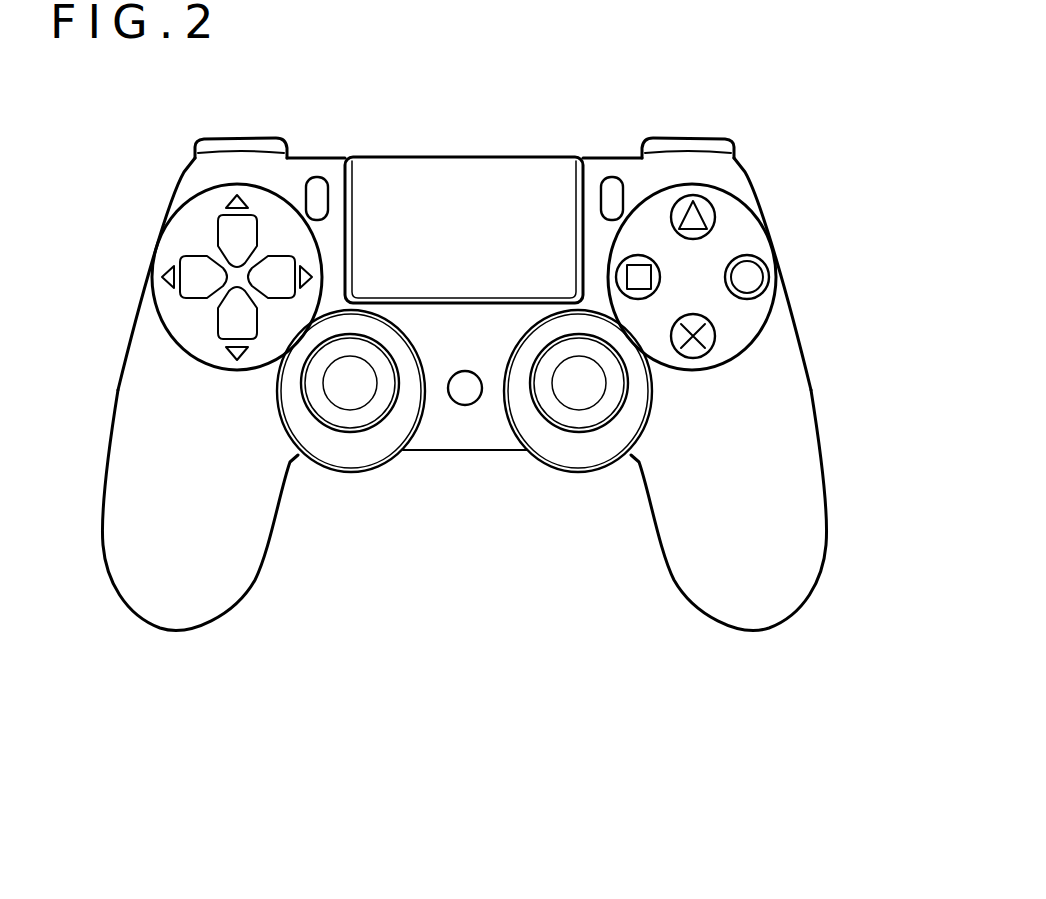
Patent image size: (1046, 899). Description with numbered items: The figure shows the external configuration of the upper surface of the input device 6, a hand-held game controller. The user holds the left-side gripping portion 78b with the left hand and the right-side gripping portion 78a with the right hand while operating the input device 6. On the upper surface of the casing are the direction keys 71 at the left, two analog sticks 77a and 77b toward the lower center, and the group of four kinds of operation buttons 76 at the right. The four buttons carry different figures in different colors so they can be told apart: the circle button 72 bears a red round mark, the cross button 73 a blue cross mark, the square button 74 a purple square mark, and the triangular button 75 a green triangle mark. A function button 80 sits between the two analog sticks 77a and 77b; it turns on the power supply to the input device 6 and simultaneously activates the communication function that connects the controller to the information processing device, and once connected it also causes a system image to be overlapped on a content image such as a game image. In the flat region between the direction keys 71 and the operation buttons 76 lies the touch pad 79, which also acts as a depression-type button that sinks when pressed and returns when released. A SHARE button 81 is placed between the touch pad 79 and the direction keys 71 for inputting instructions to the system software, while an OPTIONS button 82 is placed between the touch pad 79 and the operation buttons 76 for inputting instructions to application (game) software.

The input device 6 is at (473, 785).
The direction keys 71 is at (197, 237).
The circle button 72 is at (748, 300).
The cross button 73 is at (787, 362).
The square button 74 is at (638, 255).
The triangular button 75 is at (715, 210).
The operation buttons 76 is at (787, 276).
The analog stick 77a is at (579, 398).
The analog stick 77b is at (350, 398).
The right-side gripping portion 78a is at (750, 612).
The left-side gripping portion 78b is at (179, 613).
The touch pad 79 is at (452, 178).
The function button 80 is at (465, 405).
The SHARE button 81 is at (330, 198).
The OPTIONS button 82 is at (598, 198).